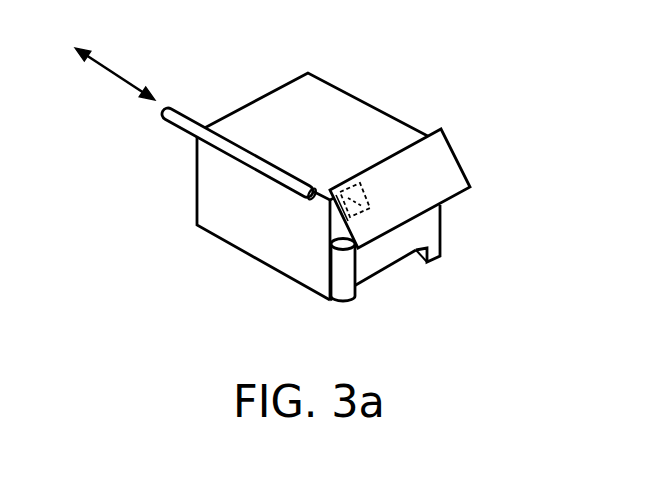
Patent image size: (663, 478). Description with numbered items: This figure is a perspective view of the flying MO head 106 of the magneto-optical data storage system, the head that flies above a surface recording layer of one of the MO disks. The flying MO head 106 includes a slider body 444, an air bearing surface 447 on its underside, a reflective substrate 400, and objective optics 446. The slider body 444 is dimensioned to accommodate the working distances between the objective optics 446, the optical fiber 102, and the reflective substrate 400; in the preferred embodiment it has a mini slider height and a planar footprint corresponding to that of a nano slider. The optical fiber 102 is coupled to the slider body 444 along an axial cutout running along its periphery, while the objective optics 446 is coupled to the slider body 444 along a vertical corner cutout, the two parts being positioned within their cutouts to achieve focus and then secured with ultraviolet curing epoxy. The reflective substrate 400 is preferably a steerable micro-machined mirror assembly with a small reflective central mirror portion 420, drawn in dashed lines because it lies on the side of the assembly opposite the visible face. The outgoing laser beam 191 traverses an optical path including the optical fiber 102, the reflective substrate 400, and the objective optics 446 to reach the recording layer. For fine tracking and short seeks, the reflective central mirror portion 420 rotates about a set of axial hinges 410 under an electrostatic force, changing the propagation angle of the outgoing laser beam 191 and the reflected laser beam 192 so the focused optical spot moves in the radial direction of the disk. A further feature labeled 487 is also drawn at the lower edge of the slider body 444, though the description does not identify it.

The optical fiber 102 is at (183, 117).
The flying MO head 106 is at (334, 143).
The outgoing laser beam 191 is at (87, 119).
The reflected laser beam 192 is at (115, 55).
The reflective substrate 400 is at (450, 140).
The axial hinges 410 is at (366, 198).
The reflective central mirror portion 420 is at (335, 208).
The slider body 444 is at (237, 193).
The objective optics 446 is at (337, 273).
The air bearing surface 447 is at (436, 258).
The base edge 487 is at (386, 276).